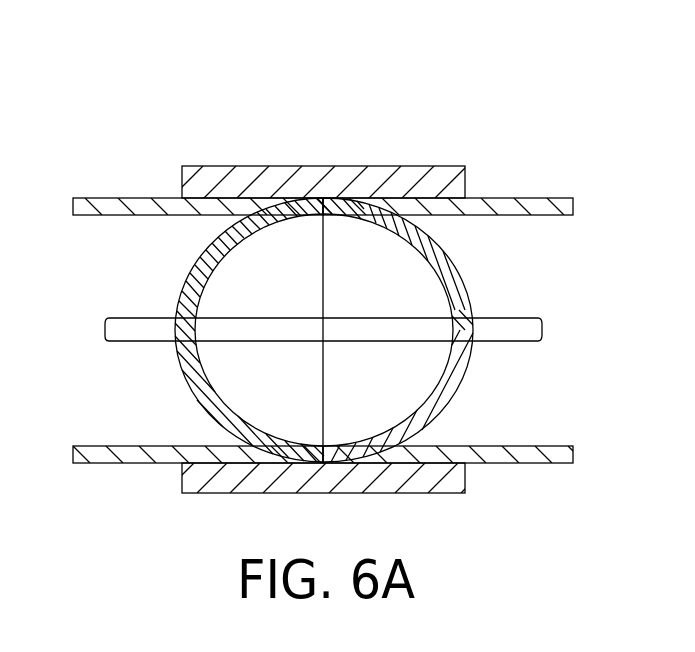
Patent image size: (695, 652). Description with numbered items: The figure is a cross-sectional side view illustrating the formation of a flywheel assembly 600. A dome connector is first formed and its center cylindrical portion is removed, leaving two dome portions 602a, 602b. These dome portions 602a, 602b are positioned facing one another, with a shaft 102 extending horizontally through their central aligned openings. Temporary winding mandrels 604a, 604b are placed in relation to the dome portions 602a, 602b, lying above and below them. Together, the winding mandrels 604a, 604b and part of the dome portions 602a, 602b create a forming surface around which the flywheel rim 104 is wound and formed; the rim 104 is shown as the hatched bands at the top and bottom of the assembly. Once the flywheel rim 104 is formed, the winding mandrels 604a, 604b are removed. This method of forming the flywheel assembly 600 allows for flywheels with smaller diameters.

The flywheel assembly 600 is at (462, 77).
The flywheel rim 104 is at (385, 166).
The temporary winding mandrel 604a is at (110, 198).
The temporary winding mandrel 604b is at (553, 198).
The dome portion 602a is at (175, 305).
The dome portion 602b is at (473, 303).
The shaft 102 is at (497, 342).